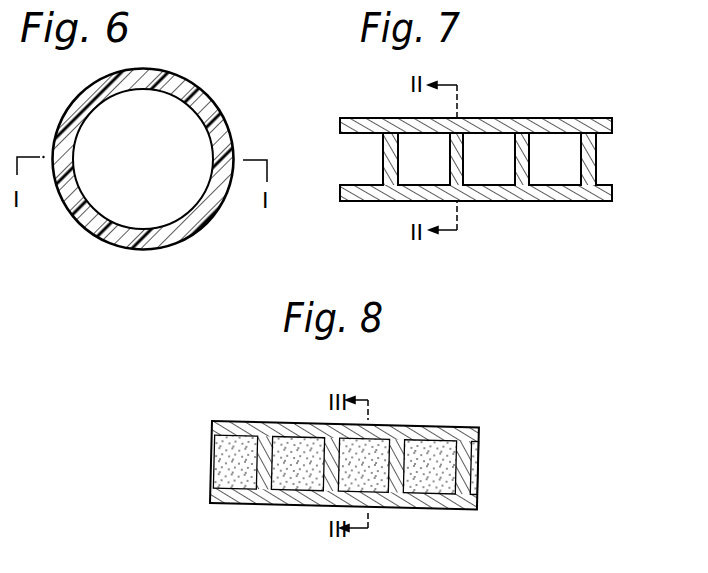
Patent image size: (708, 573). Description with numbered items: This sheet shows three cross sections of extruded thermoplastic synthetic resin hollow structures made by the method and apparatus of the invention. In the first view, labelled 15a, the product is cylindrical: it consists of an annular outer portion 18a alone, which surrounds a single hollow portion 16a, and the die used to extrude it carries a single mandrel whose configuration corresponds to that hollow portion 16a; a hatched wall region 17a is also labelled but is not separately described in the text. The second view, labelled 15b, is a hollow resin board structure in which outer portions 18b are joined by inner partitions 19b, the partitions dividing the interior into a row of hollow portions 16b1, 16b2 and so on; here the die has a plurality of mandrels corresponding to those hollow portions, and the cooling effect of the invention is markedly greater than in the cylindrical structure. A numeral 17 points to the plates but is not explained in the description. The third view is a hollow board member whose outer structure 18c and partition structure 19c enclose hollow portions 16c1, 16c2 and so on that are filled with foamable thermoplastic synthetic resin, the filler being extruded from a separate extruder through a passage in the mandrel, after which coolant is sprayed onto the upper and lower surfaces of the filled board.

In FIG. 6, the tubular laminated member 15a is at (143, 57).
In FIG. 6, the hollow portion 16a is at (166, 167).
In FIG. 6, the laminated wall layer 17a is at (173, 75).
In FIG. 6, the annular outer portion 18a is at (200, 100).
In FIG. 7, the panel member 15b is at (476, 70).
In FIG. 7, the plate layer 17 is at (564, 128).
In FIG. 7, the outer portions 18b is at (608, 129).
In FIG. 7, the inner partitions 19b is at (596, 160).
In FIG. 7, the hollow portion 16b1 is at (368, 164).
In FIG. 7, the hollow portion 16b2 is at (423, 181).
In FIG. 8, the outer structure 18c is at (308, 415).
In FIG. 8, the partition structure 19c is at (462, 470).
In FIG. 8, the hollow portion filled with foamable material 16c1 is at (220, 467).
In FIG. 8, the hollow portion filled with foamable material 16c2 is at (293, 481).